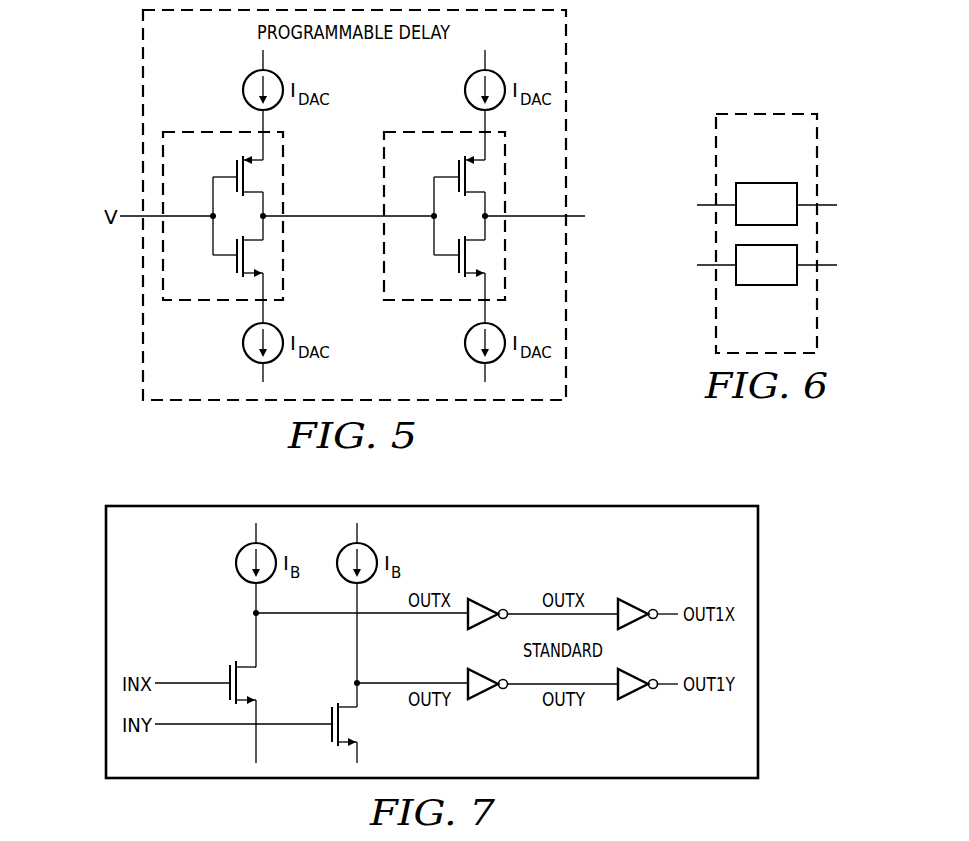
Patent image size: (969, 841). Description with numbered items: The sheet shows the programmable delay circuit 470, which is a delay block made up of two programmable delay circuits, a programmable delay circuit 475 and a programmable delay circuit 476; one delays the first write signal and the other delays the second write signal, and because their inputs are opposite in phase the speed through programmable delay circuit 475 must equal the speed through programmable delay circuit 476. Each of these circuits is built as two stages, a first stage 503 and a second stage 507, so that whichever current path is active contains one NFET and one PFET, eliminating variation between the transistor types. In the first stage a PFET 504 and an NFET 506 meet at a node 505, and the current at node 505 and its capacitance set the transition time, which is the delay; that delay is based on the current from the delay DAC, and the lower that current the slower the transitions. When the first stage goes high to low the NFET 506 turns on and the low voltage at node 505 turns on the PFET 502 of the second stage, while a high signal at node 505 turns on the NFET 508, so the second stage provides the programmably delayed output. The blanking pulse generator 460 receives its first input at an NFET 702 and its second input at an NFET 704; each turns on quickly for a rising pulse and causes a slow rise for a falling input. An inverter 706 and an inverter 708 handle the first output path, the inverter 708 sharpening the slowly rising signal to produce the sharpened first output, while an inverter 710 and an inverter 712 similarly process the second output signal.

In FIG. 5, the programmable delay circuit 475 is at (297, 205).
In FIG. 6, the programmable delay circuit 475 is at (766, 183).
In FIG. 5, the programmable delay circuit 476 is at (141, 112).
In FIG. 6, the programmable delay circuit 476 is at (765, 286).
In FIG. 6, the programmable delay circuit 470 is at (776, 113).
In FIG. 5, the first inverter 503 is at (206, 130).
In FIG. 5, the second stage 507 is at (427, 130).
In FIG. 5, the PFET 504 is at (237, 163).
In FIG. 5, the NFET 506 is at (237, 265).
In FIG. 5, the PFET 502 is at (459, 163).
In FIG. 5, the NFET 508 is at (459, 265).
In FIG. 5, the node 505 is at (334, 215).
In FIG. 7, the blanking pulse generator 460 is at (190, 596).
In FIG. 7, the NFET 702 is at (230, 672).
In FIG. 7, the NFET 704 is at (332, 712).
In FIG. 7, the inverter 706 is at (487, 606).
In FIG. 7, the inverter 708 is at (637, 606).
In FIG. 7, the inverter 710 is at (487, 694).
In FIG. 7, the inverter 712 is at (637, 694).